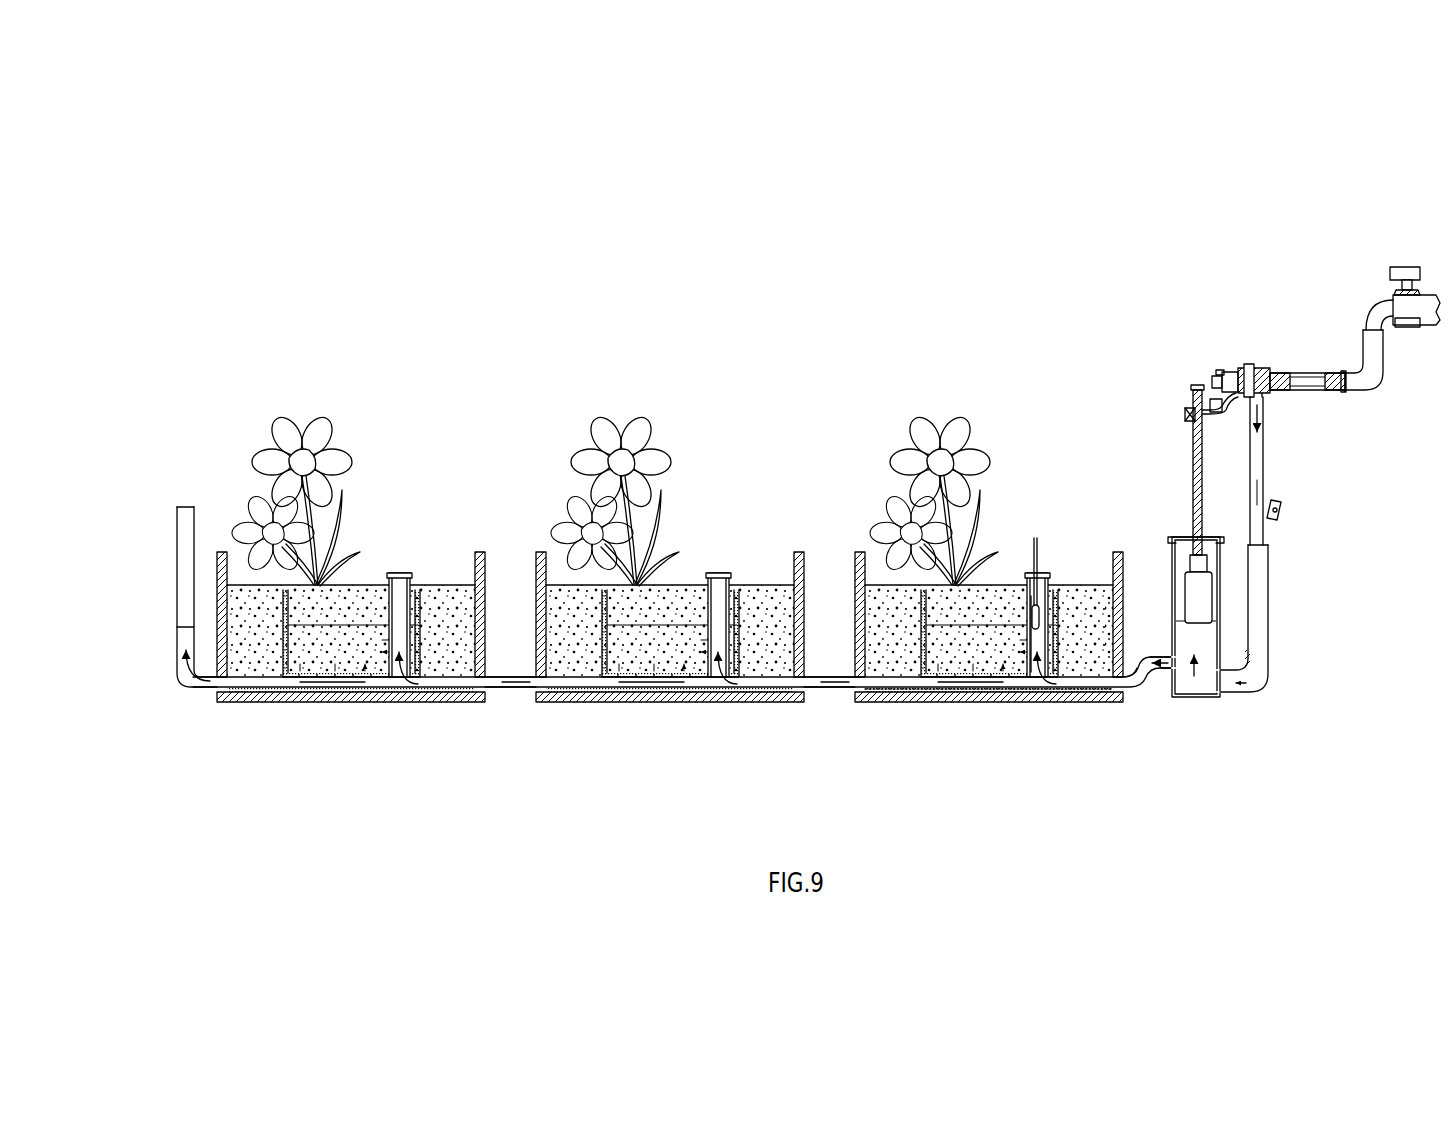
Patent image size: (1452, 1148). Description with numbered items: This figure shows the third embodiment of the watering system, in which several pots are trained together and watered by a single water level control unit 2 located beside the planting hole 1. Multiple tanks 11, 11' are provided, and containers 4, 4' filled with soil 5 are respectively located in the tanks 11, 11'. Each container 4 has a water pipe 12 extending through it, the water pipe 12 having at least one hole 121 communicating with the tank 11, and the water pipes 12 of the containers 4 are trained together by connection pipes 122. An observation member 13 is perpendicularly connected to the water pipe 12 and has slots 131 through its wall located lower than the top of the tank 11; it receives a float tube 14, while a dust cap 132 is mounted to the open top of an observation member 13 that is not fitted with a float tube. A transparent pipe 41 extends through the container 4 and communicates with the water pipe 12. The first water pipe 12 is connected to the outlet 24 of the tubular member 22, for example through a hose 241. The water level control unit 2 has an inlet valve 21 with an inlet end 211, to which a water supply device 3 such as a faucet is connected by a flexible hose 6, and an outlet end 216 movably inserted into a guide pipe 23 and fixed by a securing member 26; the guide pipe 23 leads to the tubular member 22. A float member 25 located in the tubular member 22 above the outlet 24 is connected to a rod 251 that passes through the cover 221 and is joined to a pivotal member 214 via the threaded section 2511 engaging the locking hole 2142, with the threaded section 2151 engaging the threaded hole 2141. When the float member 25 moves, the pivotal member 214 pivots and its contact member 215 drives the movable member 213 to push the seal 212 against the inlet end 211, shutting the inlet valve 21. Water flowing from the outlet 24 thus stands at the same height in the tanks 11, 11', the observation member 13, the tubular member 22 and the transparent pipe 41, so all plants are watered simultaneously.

The planting hole 1 is at (858, 530).
The water level control unit 2 is at (1310, 338).
The water supply device 3 is at (1412, 322).
The container 4 is at (1007, 627).
The container 4' is at (531, 627).
The soil 5 is at (1105, 628).
The hose 6 is at (1372, 372).
The tank 11 is at (972, 667).
The tank 11' is at (493, 667).
The water pipe 12 is at (1022, 690).
The hole 121 is at (1000, 678).
The connection pipe 122 is at (505, 692).
The observation member 13 is at (1049, 582).
The slot 131 is at (1028, 598).
The dust cap 132 is at (722, 572).
The float tube 14 is at (1033, 545).
The inlet valve 21 is at (1270, 372).
The inlet end 211 is at (1312, 390).
The seal 212 is at (1252, 366).
The movable member 213 is at (1238, 372).
The pivotal member 214 is at (1218, 408).
The threaded hole 2141 is at (1222, 396).
The locking hole 2142 is at (1196, 412).
The contact member 215 is at (1222, 380).
The threaded section 2151 is at (1232, 374).
The outlet end 216 is at (1265, 462).
The tubular member 22 is at (1176, 697).
The cover 221 is at (1178, 536).
The guide pipe 23 is at (1268, 552).
The outlet 24 is at (1160, 670).
The hose 241 is at (1133, 674).
The float member 25 is at (1194, 580).
The rod 251 is at (1193, 468).
The threaded section 2511 is at (1191, 422).
The securing member 26 is at (1279, 505).
The transparent pipe 41 is at (177, 600).